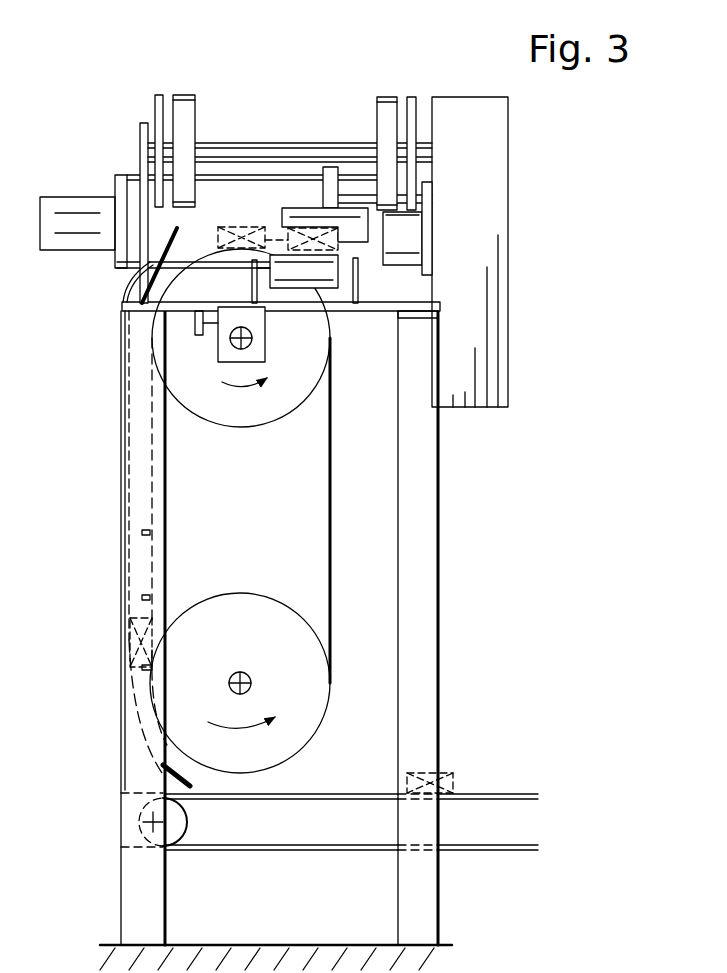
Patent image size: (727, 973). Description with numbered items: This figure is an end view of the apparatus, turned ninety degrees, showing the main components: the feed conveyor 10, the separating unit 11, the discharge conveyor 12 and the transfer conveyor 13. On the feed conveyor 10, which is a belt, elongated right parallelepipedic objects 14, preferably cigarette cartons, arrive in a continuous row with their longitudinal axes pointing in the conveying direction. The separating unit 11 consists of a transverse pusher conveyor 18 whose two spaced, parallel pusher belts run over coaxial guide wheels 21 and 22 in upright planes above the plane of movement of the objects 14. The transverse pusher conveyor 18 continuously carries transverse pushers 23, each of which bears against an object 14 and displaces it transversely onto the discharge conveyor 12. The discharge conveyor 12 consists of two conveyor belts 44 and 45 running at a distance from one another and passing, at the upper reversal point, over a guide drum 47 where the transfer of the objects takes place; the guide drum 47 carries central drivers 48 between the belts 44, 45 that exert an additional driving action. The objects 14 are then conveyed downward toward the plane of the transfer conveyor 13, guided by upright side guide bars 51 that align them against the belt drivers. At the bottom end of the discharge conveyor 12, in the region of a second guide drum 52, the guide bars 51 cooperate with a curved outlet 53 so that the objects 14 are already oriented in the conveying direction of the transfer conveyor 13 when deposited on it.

The feed conveyor 10 is at (318, 272).
The separating unit 11 is at (314, 154).
The discharge conveyor 12 is at (357, 497).
The transfer conveyor 13 is at (472, 763).
The objects 14 is at (226, 236).
The transverse pusher conveyor 18 is at (260, 163).
The guide wheel 21 is at (388, 103).
The guide wheel 22 is at (183, 103).
The transverse pusher 23 is at (362, 228).
The conveyor belt 44 is at (350, 510).
The conveyor belt 45 is at (330, 592).
The guide drum 47 is at (287, 393).
The drivers 48 is at (147, 535).
The side guide bars 51 is at (142, 485).
The second guide drum 52 is at (312, 696).
The curved outlet 53 is at (137, 732).